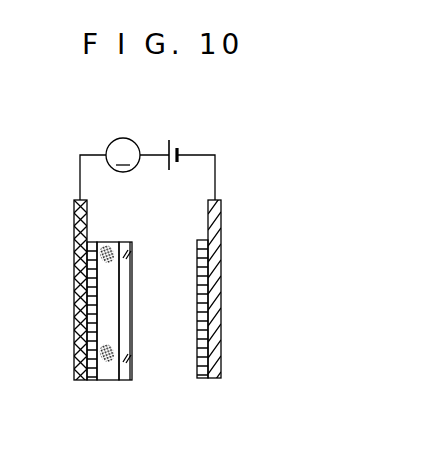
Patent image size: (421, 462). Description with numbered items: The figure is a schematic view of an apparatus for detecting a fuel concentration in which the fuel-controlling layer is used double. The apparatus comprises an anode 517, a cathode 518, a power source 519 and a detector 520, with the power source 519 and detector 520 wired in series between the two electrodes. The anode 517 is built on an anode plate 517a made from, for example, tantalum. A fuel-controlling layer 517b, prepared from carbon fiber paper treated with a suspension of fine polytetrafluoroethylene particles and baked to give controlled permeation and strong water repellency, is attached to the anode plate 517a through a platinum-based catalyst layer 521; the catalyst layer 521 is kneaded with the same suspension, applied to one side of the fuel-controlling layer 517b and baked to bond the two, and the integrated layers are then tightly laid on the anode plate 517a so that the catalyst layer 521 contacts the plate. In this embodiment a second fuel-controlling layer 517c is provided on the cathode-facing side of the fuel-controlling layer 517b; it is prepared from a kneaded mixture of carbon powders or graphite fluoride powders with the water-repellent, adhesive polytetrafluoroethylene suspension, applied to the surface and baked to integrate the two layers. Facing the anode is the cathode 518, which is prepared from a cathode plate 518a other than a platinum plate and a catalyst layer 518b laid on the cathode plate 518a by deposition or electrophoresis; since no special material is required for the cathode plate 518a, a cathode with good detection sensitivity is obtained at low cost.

The anode 517 is at (104, 309).
The anode plate 517a is at (74, 218).
The fuel-controlling layer 517b is at (105, 381).
The second fuel-controlling layer 517c is at (121, 381).
The cathode 518 is at (236, 312).
The cathode plate 518a is at (221, 293).
The catalyst layer 518b is at (204, 334).
The power source 519 is at (172, 140).
The detector 520 is at (123, 138).
The catalyst layer 521 is at (90, 381).